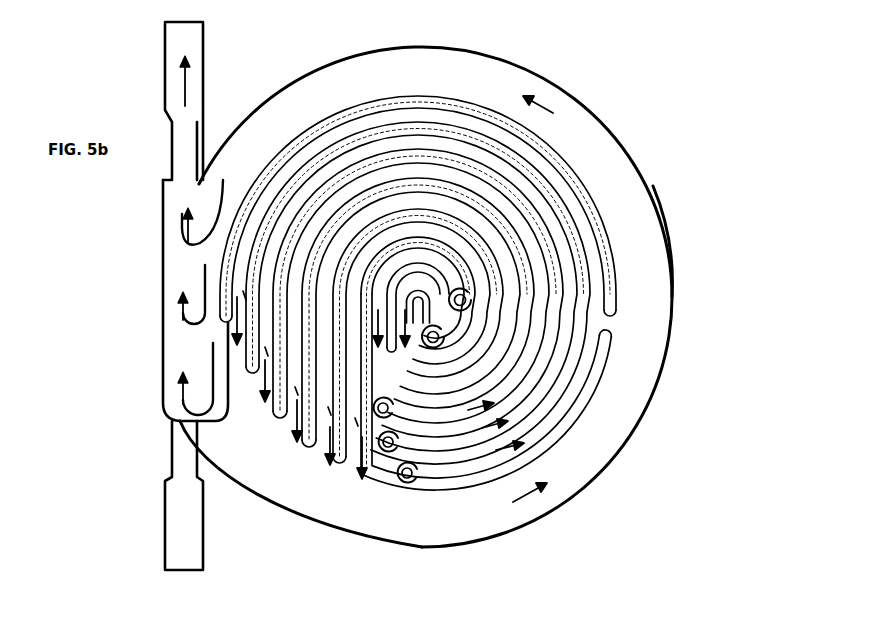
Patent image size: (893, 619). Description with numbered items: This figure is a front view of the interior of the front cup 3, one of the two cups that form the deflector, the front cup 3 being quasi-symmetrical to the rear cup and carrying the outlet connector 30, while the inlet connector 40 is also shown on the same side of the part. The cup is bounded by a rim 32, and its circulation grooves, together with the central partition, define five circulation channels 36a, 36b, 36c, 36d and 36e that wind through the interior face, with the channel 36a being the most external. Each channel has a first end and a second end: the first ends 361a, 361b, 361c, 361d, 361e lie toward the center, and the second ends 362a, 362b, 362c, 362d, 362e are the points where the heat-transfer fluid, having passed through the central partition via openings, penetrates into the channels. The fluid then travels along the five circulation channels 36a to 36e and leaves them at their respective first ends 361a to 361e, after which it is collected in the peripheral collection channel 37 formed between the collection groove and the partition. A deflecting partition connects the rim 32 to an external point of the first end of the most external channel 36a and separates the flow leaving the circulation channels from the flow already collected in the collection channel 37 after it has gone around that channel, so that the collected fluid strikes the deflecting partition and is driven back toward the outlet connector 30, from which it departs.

The front cup 3 is at (677, 140).
The outlet connector 30 is at (165, 68).
The rim 32 is at (268, 93).
The circulation channel 36a is at (333, 133).
The circulation channel 36b is at (364, 152).
The circulation channel 36c is at (411, 172).
The circulation channel 36d is at (447, 262).
The circulation channel 36e is at (433, 235).
The collection channel 37 is at (656, 277).
The inlet connector 40 is at (165, 536).
The first end of circulation channel 361a is at (466, 300).
The first end of circulation channel 361b is at (439, 337).
The first end of circulation channel 361c is at (295, 387).
The first end of circulation channel 361d is at (328, 407).
The first end of circulation channel 361e is at (355, 418).
The second end of circulation channel 362a is at (388, 414).
The second end of circulation channel 362b is at (394, 447).
The second end of circulation channel 362c is at (413, 476).
The second end of circulation channel 362d is at (243, 291).
The second end of circulation channel 362e is at (265, 347).